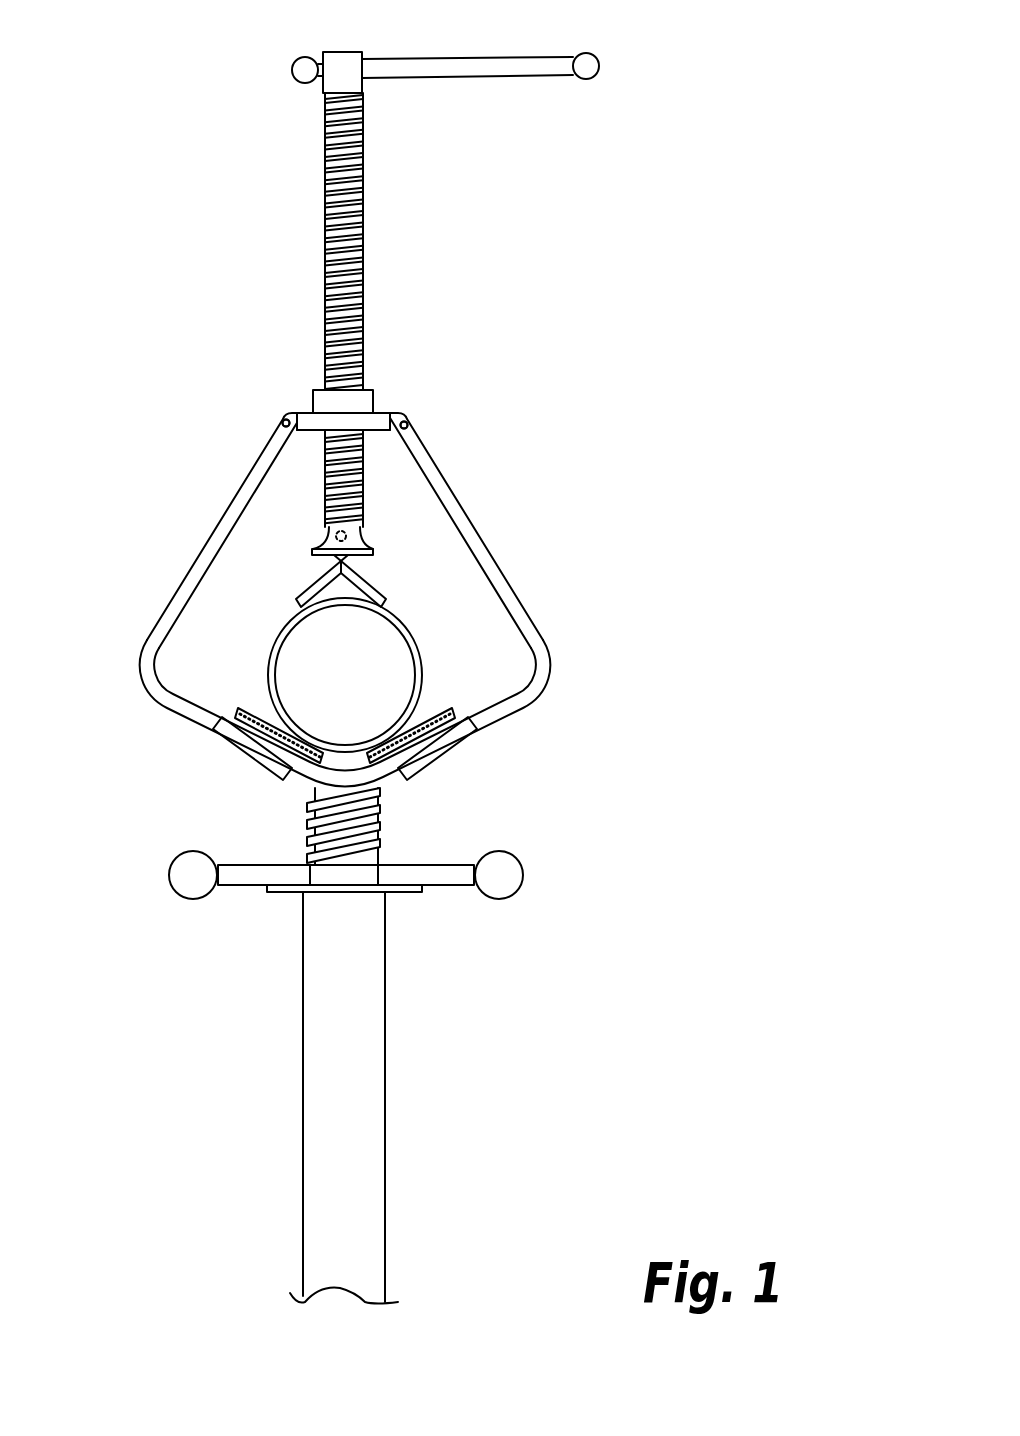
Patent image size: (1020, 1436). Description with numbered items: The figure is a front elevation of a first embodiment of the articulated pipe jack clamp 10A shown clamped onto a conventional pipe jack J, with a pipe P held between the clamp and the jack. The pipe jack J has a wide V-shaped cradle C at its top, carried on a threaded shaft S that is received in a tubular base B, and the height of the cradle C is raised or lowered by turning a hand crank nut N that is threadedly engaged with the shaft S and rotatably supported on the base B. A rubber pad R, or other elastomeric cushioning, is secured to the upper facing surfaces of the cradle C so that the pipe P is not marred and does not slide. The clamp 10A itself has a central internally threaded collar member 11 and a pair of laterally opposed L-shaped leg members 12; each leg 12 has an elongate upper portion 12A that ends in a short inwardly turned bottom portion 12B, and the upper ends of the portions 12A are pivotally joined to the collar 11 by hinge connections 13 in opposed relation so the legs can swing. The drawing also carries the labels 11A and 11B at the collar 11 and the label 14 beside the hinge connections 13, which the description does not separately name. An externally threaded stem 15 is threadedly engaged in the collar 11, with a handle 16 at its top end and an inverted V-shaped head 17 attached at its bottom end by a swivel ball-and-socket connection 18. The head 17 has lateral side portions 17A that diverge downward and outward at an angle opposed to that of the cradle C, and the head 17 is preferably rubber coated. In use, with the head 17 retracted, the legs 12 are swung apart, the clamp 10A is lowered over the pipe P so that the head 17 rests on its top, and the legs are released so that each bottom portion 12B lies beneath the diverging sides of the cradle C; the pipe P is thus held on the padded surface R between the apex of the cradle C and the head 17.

The articulated pipe jack clamp 10A is at (562, 447).
The central internally threaded collar member 11 is at (380, 397).
The threaded nut of cross member 11A is at (308, 407).
The end portions of cross member 11B is at (297, 415).
The L-shaped leg member 12 is at (346, 600).
The elongate upper portion 12A is at (243, 487).
The inwardly turned bottom portion 12B is at (180, 713).
The hinge connection 13 is at (282, 424).
The pivot connection 14 is at (410, 427).
The externally threaded stem 15 is at (365, 265).
The handle 16 is at (468, 62).
The inverted V-shaped head 17 is at (365, 572).
The lateral side portions 17A is at (315, 585).
The ball-and-socket connection 18 is at (350, 533).
The pipe P is at (417, 648).
The rubber pad R is at (247, 707).
The pipe jack J is at (604, 914).
The threaded shaft S is at (307, 823).
The V-shaped cradle C is at (350, 780).
The hand crank nut N is at (430, 877).
The tubular base B is at (385, 1077).